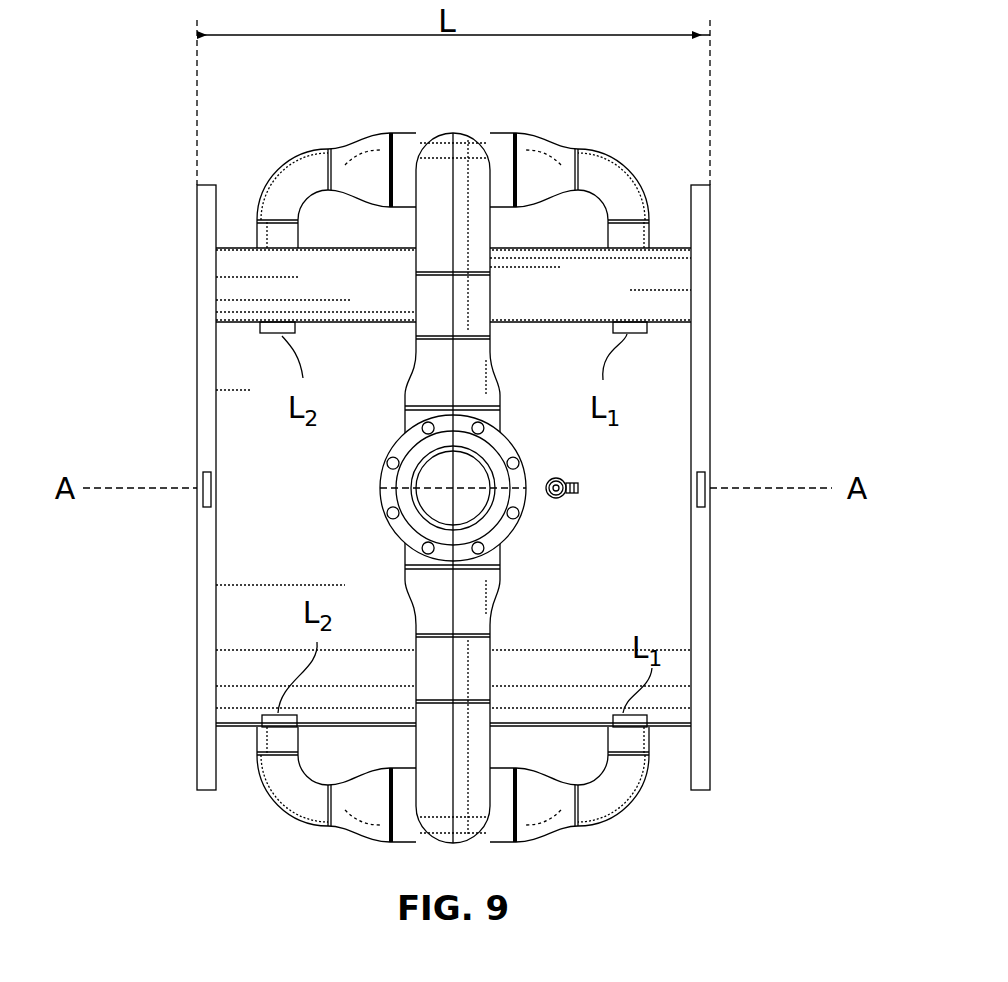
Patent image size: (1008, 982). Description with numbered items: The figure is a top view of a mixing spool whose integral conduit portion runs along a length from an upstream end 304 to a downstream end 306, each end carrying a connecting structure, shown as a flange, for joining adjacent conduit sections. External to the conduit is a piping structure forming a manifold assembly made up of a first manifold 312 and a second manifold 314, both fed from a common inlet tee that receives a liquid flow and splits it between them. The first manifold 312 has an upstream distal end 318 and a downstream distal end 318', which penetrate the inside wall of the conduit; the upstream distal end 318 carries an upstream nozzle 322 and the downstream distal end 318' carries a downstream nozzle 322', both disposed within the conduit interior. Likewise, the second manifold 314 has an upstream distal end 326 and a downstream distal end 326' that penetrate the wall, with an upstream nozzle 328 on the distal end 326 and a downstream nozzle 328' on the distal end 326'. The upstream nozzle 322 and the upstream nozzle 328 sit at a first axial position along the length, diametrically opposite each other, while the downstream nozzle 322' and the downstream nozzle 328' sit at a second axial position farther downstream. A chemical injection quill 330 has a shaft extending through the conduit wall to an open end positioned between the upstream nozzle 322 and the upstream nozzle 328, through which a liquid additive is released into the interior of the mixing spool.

The upstream end 304 is at (710, 275).
The downstream end 306 is at (202, 185).
The first manifold 312 is at (504, 856).
The second manifold 314 is at (533, 124).
The upstream distal end 318 is at (591, 794).
The downstream distal end 318' is at (313, 794).
The upstream nozzle 322 is at (712, 688).
The downstream nozzle 322' is at (192, 687).
The upstream distal end 326 is at (654, 190).
The downstream distal end 326' is at (248, 221).
The upstream nozzle 328 is at (711, 376).
The downstream nozzle 328' is at (330, 346).
The chemical injection quill 330 is at (558, 500).